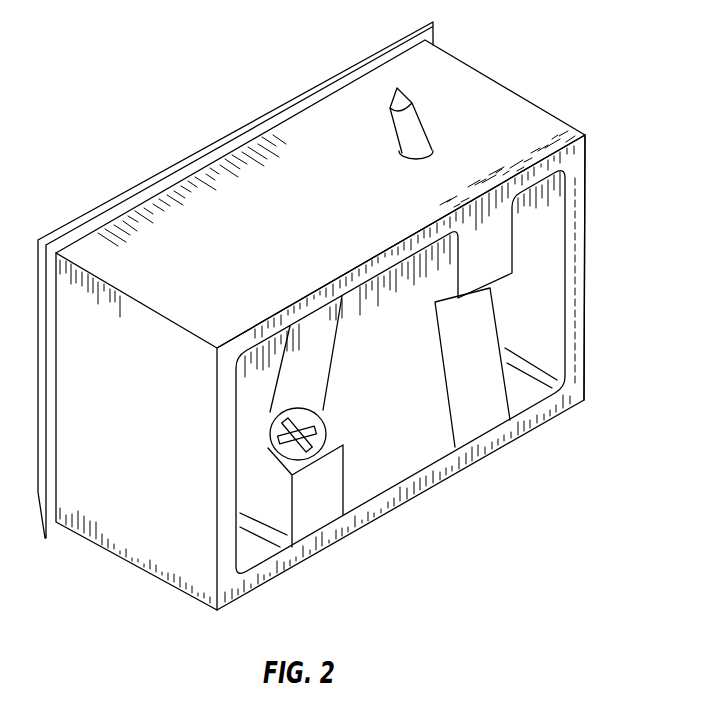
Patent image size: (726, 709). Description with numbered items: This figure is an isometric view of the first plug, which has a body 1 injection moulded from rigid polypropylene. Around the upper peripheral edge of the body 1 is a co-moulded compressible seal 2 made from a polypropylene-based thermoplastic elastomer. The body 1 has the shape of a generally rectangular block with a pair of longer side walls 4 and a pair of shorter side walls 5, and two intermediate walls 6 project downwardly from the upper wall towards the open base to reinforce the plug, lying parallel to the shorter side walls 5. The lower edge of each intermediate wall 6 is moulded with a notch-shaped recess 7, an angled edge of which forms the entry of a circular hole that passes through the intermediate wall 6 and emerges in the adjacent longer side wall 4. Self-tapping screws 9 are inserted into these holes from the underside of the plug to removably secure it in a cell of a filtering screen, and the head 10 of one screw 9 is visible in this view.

The body 1 is at (540, 112).
The compressible seal 2 is at (215, 140).
The longer side wall 4 is at (438, 78).
The shorter side wall 5 is at (585, 252).
The intermediate wall 6 is at (312, 512).
The notch-shaped recess 7 is at (316, 353).
The self-tapping screw 9 is at (416, 127).
The head 10 is at (315, 442).